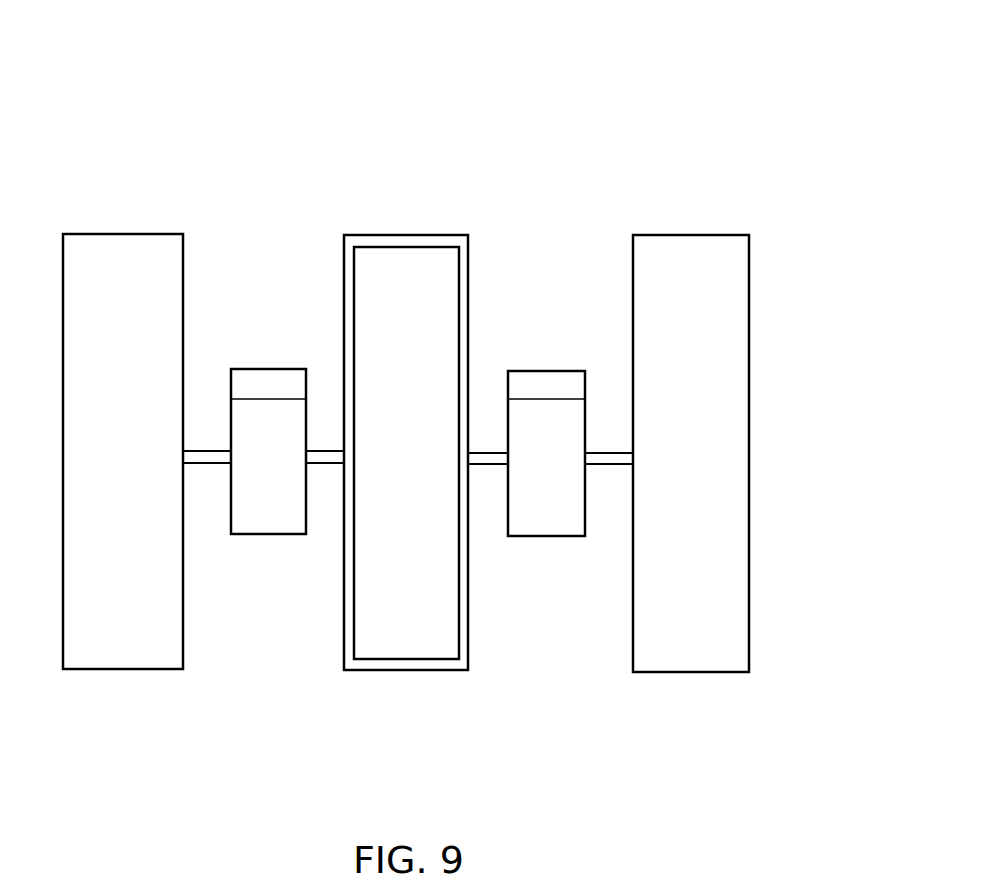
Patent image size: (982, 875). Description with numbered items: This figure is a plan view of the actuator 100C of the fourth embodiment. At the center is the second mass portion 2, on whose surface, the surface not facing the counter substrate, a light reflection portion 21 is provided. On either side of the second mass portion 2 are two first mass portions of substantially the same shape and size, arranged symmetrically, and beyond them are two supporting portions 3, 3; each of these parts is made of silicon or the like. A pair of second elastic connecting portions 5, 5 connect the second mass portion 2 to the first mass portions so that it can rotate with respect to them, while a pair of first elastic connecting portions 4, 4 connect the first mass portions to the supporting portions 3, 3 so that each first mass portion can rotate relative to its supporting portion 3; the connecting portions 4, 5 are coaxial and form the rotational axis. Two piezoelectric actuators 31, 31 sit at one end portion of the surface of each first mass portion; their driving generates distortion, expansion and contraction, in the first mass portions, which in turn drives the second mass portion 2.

The actuator 100C is at (700, 80).
The second mass portion 2 is at (402, 241).
The light reflection portion 21 is at (399, 641).
The supporting portion 3 is at (128, 647).
The piezoelectric actuator 31 is at (267, 379).
The first elastic connecting portion 4 is at (206, 457).
The second elastic connecting portion 5 is at (328, 460).